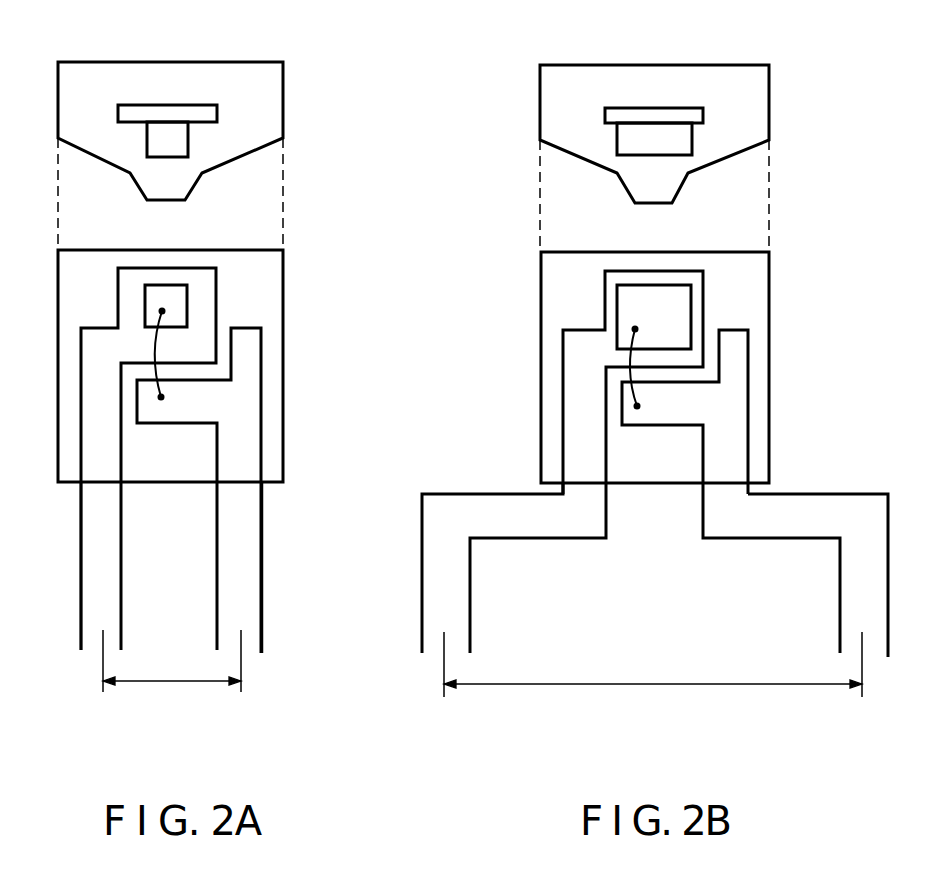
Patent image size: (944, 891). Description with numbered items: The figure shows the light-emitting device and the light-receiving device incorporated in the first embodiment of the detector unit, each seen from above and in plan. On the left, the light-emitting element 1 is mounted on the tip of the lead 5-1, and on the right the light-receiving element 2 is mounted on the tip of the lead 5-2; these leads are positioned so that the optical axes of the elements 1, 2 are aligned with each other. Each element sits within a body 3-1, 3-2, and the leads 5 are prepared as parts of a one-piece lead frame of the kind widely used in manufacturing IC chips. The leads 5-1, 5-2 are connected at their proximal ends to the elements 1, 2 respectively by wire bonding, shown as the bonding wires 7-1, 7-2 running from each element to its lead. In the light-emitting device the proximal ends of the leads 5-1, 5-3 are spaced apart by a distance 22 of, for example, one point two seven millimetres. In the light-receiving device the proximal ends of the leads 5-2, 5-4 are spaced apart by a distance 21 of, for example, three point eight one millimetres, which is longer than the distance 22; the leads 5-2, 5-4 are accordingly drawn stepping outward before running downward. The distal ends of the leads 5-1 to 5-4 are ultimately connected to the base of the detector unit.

In FIG. 2A, the light-emitting element 1 is at (147, 136).
In FIG. 2B, the light-receiving element 2 is at (617, 140).
In FIG. 2A, the first package body 3-1 is at (205, 62).
In FIG. 2B, the second package body 3-2 is at (672, 66).
In FIG. 2A, the leads 5 is at (217, 582).
In FIG. 2B, the leads 5 is at (592, 530).
In FIG. 2A, the lead 5-1 is at (210, 105).
In FIG. 2B, the lead 5-2 is at (700, 108).
In FIG. 2A, the lead 5-3 is at (253, 625).
In FIG. 2B, the lead 5-4 is at (850, 622).
In FIG. 2A, the first bonding wire 7-1 is at (161, 397).
In FIG. 2B, the wire 7-2 is at (637, 406).
In FIG. 2B, the distance 21 is at (682, 686).
In FIG. 2A, the distance 22 is at (168, 683).